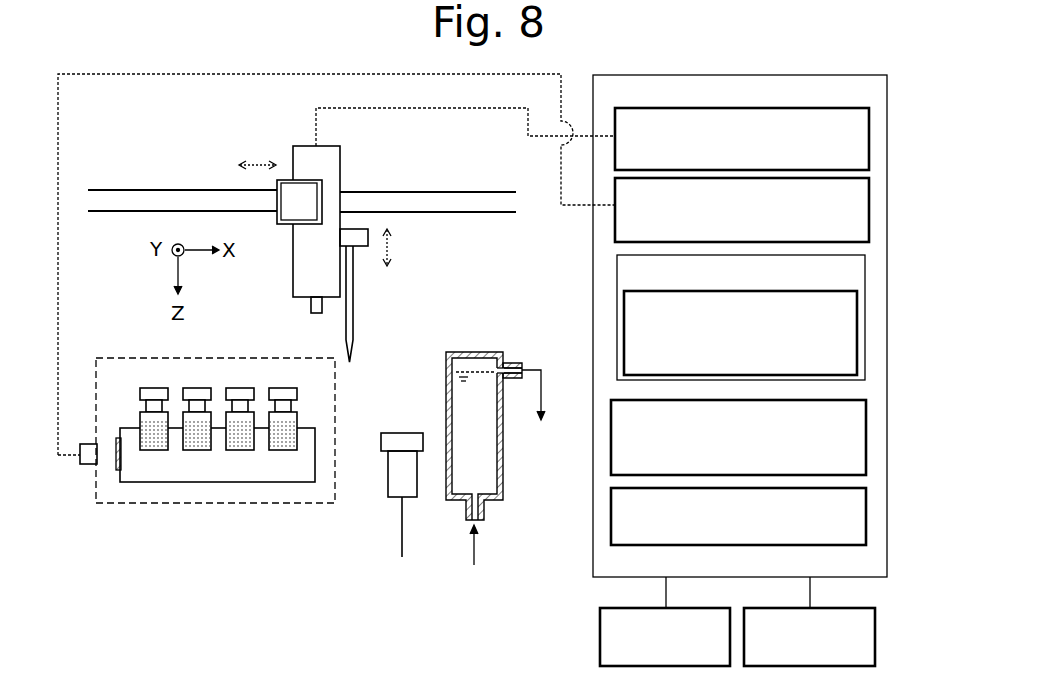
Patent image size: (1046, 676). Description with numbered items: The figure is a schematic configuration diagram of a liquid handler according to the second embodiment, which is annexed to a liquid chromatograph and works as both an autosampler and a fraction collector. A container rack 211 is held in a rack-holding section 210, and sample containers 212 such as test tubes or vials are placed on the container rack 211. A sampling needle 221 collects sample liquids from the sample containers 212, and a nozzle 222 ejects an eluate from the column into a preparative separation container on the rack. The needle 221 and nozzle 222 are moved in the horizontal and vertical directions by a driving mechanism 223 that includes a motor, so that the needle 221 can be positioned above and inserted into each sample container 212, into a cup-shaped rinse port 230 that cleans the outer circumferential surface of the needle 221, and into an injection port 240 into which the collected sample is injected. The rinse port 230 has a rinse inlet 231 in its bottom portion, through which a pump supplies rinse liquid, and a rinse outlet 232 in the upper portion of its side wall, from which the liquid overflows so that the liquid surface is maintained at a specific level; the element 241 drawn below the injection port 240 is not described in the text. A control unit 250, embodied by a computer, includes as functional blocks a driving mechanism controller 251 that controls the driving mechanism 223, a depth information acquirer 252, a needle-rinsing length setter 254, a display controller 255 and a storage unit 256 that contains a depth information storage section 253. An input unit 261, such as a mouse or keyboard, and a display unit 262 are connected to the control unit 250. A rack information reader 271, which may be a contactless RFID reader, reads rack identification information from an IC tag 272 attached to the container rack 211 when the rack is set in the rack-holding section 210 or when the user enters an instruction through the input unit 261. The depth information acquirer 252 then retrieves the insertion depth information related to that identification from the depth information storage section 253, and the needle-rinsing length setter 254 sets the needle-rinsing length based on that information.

The rack-holding section 210 is at (217, 466).
The container rack 211 is at (288, 483).
The sample container 212 is at (193, 447).
The sampling needle 221 is at (355, 326).
The nozzle 222 is at (308, 306).
The driving mechanism 223 is at (351, 162).
The rinse port 230 is at (500, 426).
The rinse inlet 231 is at (488, 501).
The rinse outlet 232 is at (511, 362).
The injection port 240 is at (403, 433).
The detection stem 241 is at (400, 529).
The control unit 250 is at (771, 325).
The driving mechanism controller 251 is at (873, 142).
The depth information acquirer 252 is at (873, 212).
The depth information storage section 253 is at (858, 335).
The needle-rinsing length setter 254 is at (867, 440).
The display controller 255 is at (867, 520).
The storage unit 256 is at (867, 278).
The input unit 261 is at (600, 643).
The display unit 262 is at (875, 640).
The rack information reader 271 is at (88, 466).
The IC tag 272 is at (112, 452).